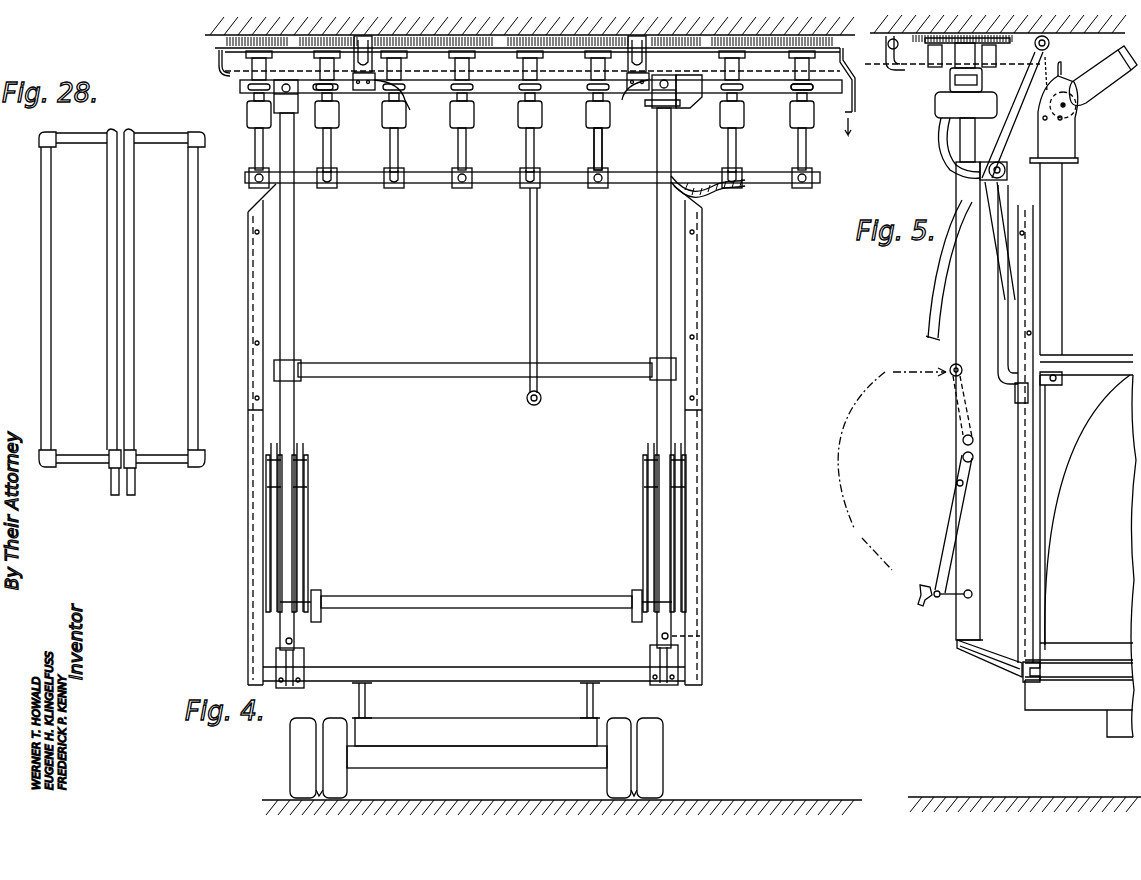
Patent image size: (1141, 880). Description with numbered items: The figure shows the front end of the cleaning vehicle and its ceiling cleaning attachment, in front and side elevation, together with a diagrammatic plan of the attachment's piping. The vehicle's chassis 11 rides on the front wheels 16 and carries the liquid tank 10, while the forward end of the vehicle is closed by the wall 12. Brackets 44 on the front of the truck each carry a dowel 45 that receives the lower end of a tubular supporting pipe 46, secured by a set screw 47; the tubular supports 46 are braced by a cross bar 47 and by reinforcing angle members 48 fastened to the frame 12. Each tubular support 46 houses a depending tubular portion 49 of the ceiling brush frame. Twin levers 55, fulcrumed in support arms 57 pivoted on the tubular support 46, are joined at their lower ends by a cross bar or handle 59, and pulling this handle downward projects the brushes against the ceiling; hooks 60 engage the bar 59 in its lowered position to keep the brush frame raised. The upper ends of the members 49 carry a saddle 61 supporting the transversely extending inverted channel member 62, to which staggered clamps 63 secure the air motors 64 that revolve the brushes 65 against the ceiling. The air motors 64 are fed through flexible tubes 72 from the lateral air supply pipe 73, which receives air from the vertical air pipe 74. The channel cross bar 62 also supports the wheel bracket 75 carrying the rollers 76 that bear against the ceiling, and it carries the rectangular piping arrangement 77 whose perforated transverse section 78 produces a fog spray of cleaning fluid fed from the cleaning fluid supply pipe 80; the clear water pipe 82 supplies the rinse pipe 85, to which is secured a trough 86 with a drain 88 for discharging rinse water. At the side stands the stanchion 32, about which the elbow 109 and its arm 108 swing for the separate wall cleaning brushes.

In FIG. 5, the liquid tank 10 is at (1098, 390).
In FIG. 4, the chassis 11 is at (597, 697).
In FIG. 5, the chassis 11 is at (1030, 697).
In FIG. 4, the wall 12 is at (275, 268).
In FIG. 5, the wall 12 is at (1035, 450).
In FIG. 4, the wheels 16 is at (300, 745).
In FIG. 5, the stanchion 32 is at (1060, 301).
In FIG. 4, the brackets 44 is at (300, 655).
In FIG. 5, the brackets 44 is at (990, 660).
In FIG. 4, the dowel 45 is at (702, 630).
In FIG. 4, the tubular supporting pipe 46 is at (296, 265).
In FIG. 5, the tubular supporting pipe 46 is at (955, 255).
In FIG. 4, the cross bar 47 is at (598, 370).
In FIG. 4, the reinforcing angle members 48 is at (252, 248).
In FIG. 5, the reinforcing angle members 48 is at (1012, 252).
In FIG. 4, the depending tubular portions 49 is at (300, 180).
In FIG. 5, the depending tubular portions 49 is at (962, 122).
In FIG. 4, the twin levers 55 is at (306, 520).
In FIG. 5, the twin levers 55 is at (950, 510).
In FIG. 4, the support arms 57 is at (306, 480).
In FIG. 4, the cross bar or handle 59 is at (490, 600).
In FIG. 4, the hooks 60 is at (318, 592).
In FIG. 5, the hooks 60 is at (925, 585).
In FIG. 4, the saddle 61 is at (488, 80).
In FIG. 4, the inverted channel member 62 is at (695, 103).
In FIG. 4, the clamps 63 is at (465, 91).
In FIG. 4, the air motors 64 is at (525, 120).
In FIG. 5, the air motors 64 is at (990, 112).
In FIG. 4, the brushes 65 is at (225, 75).
In FIG. 5, the brushes 65 is at (920, 50).
In FIG. 4, the flexible tubes 72 is at (603, 148).
In FIG. 5, the flexible tubes 72 is at (940, 150).
In FIG. 4, the air supply tube or pipe 73 is at (568, 183).
In FIG. 5, the air supply tube or pipe 73 is at (985, 175).
In FIG. 4, the vertical air pipe 74 is at (538, 265).
In FIG. 5, the vertical air pipe 74 is at (995, 333).
In FIG. 4, the wheel bracket 75 is at (511, 106).
In FIG. 4, the wheels or rollers 76 is at (362, 92).
In FIG. 28, the rectangular piping arrangement 77 is at (78, 135).
In FIG. 28, the transverse pipe section 78 is at (42, 258).
In FIG. 28, the cleaning fluid supply pipe 80 is at (115, 495).
In FIG. 28, the clear water pipe 82 is at (131, 495).
In FIG. 28, the rinse pipe 85 is at (190, 324).
In FIG. 5, the trough 86 is at (1055, 58).
In FIG. 5, the drain 88 is at (930, 306).
In FIG. 5, the arm 108 is at (1088, 90).
In FIG. 5, the elbow 109 is at (1086, 100).